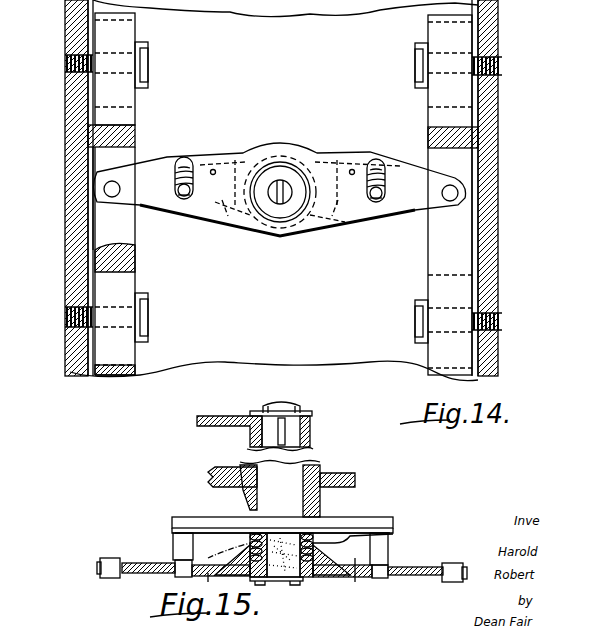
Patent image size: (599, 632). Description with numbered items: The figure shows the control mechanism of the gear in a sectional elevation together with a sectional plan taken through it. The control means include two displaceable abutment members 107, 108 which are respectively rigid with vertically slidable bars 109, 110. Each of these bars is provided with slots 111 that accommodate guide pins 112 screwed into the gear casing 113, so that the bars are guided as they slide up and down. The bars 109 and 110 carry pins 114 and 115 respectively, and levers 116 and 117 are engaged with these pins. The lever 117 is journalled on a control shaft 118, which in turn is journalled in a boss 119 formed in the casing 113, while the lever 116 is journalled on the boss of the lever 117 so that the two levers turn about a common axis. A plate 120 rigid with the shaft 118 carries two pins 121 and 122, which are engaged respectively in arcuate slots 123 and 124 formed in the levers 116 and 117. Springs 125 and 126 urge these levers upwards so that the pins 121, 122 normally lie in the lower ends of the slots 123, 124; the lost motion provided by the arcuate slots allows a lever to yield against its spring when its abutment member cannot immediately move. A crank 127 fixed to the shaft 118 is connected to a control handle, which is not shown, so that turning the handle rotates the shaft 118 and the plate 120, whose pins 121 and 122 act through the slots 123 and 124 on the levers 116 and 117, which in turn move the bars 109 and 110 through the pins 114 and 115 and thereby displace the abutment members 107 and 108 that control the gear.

In FIG. 14, the displaceable abutment member 107 is at (128, 125).
In FIG. 14, the displaceable abutment member 108 is at (430, 127).
In FIG. 14, the vertically slidable bar 109 is at (138, 162).
In FIG. 14, the vertically slidable bar 110 is at (428, 240).
In FIG. 14, the slot 111 is at (136, 33).
In FIG. 14, the guide pin 112 is at (149, 63).
In FIG. 14, the gear casing 113 is at (500, 96).
In FIG. 15, the gear casing 113 is at (219, 471).
In FIG. 14, the pin 114 is at (106, 186).
In FIG. 15, the pin 114 is at (103, 560).
In FIG. 14, the pin 115 is at (458, 192).
In FIG. 15, the pin 115 is at (450, 563).
In FIG. 14, the lever 116 is at (190, 160).
In FIG. 15, the lever 116 is at (158, 563).
In FIG. 14, the lever 117 is at (378, 160).
In FIG. 15, the lever 117 is at (412, 566).
In FIG. 15, the control shaft 118 is at (292, 470).
In FIG. 15, the boss 119 is at (316, 499).
In FIG. 14, the plate 120 is at (280, 146).
In FIG. 15, the plate 120 is at (360, 516).
In FIG. 14, the pin 121 is at (180, 203).
In FIG. 15, the pin 121 is at (176, 577).
In FIG. 14, the pin 122 is at (377, 203).
In FIG. 15, the pin 122 is at (384, 576).
In FIG. 14, the arcuate slot 123 is at (177, 173).
In FIG. 14, the arcuate slot 124 is at (387, 173).
In FIG. 14, the spring 125 is at (226, 218).
In FIG. 15, the spring 125 is at (172, 524).
In FIG. 14, the spring 126 is at (348, 216).
In FIG. 15, the spring 126 is at (395, 531).
In FIG. 15, the crank 127 is at (229, 416).